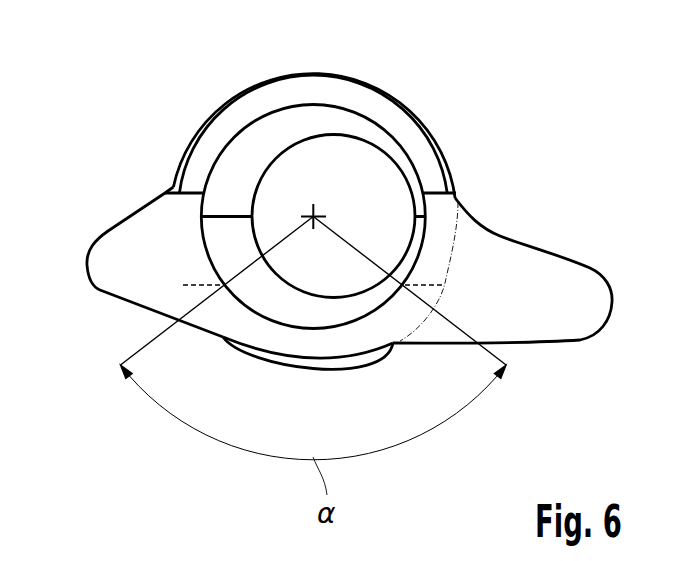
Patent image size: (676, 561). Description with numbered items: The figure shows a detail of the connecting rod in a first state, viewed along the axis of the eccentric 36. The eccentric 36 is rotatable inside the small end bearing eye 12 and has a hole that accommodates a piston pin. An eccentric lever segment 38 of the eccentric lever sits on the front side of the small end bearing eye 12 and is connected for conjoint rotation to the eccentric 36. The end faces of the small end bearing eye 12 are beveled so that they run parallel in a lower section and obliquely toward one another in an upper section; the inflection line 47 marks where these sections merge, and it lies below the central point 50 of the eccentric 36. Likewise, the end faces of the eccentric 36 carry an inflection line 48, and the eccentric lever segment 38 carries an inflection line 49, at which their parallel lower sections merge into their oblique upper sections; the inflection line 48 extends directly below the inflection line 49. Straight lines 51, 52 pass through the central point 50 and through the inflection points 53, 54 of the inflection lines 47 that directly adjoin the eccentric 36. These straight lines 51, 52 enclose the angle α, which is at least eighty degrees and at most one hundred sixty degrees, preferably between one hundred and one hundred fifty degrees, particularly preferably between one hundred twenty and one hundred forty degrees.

The small end bearing eye 12 is at (370, 87).
The eccentric 36 is at (277, 128).
The eccentric lever segment 38 is at (120, 237).
The inflection line 47 is at (430, 285).
The inflection line 48 is at (233, 212).
The inflection line 49 is at (228, 337).
The central point 50 is at (313, 212).
The straight line 51 is at (150, 340).
The straight line 52 is at (497, 352).
The inflection point 53 is at (222, 283).
The inflection point 54 is at (405, 285).